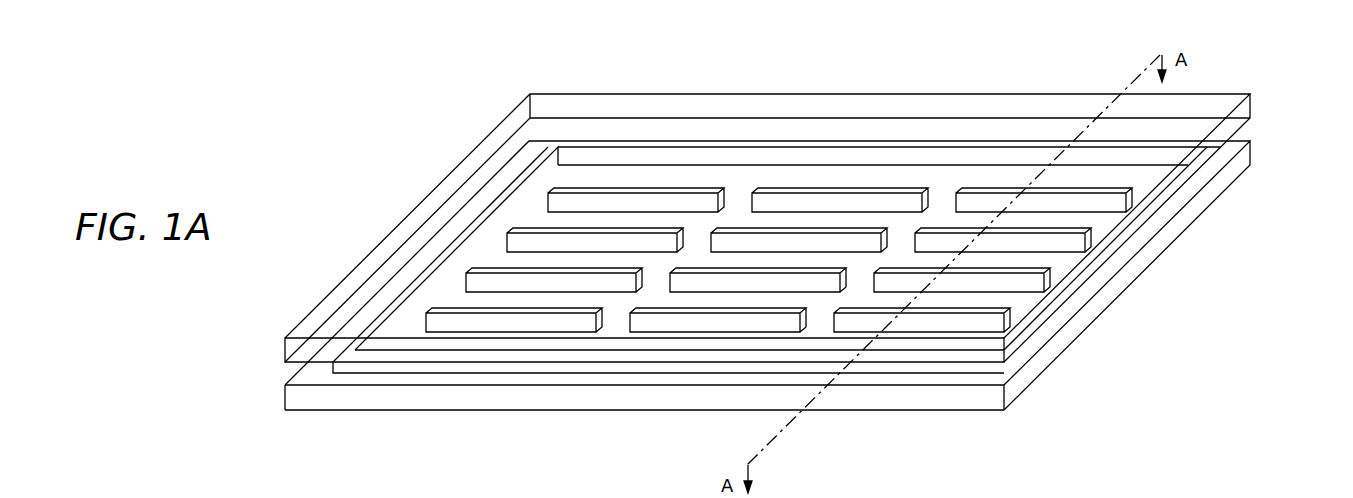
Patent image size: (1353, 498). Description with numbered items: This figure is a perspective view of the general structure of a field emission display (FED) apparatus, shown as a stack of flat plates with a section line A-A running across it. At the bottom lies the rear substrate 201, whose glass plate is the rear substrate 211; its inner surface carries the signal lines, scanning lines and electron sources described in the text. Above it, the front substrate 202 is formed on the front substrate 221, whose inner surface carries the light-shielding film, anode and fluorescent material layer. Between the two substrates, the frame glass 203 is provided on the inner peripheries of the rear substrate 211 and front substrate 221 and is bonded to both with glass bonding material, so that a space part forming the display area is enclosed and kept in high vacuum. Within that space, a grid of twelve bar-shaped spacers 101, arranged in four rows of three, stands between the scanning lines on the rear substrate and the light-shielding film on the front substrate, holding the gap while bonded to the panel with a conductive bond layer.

The spacer 101 is at (606, 200).
The rear substrate 201 is at (347, 424).
The front substrate 202 is at (631, 90).
The frame glass 203 is at (885, 372).
The rear substrate 211 is at (975, 411).
The front substrate 221 is at (1228, 125).